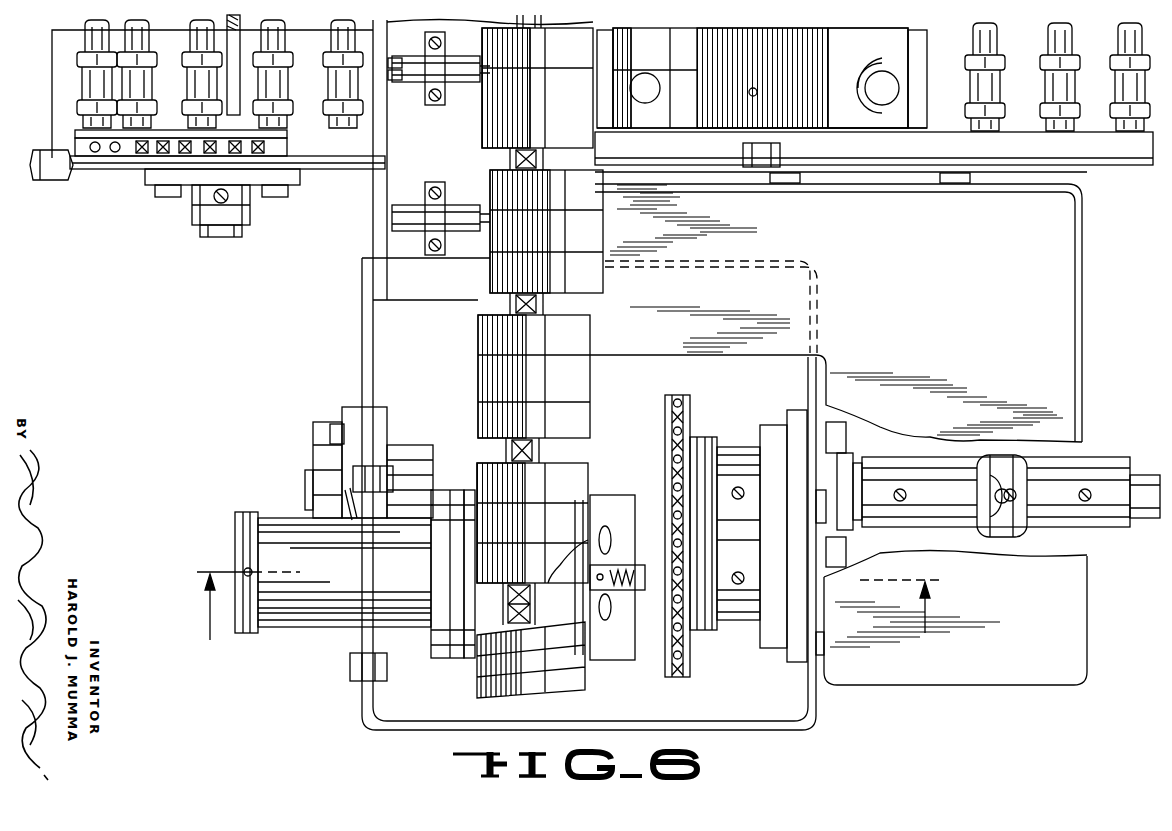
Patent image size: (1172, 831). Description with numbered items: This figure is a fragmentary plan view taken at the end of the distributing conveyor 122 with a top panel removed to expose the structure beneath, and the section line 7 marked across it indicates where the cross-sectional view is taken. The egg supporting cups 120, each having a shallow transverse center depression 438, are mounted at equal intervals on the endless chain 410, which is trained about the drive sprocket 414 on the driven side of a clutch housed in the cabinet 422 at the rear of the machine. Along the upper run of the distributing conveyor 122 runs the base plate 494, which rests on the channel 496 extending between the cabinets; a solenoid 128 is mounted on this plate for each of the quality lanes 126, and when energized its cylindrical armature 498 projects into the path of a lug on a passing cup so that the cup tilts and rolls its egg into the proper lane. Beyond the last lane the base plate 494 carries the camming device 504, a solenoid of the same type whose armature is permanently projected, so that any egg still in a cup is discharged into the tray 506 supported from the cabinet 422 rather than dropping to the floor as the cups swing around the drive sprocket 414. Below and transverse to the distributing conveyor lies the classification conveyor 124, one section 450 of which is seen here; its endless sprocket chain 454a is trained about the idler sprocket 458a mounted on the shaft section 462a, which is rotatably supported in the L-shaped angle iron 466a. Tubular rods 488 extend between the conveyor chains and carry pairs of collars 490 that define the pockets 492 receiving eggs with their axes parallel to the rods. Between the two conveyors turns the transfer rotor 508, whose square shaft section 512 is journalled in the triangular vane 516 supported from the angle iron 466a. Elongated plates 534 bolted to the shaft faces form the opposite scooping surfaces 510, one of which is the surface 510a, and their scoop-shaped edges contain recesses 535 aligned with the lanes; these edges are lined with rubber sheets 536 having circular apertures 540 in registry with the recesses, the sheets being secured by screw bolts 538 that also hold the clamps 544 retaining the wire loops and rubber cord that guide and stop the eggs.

The classification conveyor 124 is at (70, 72).
The quality lanes 126 is at (97, 87).
The collars 490 is at (192, 70).
The pockets 492 is at (193, 88).
The tubular rods 488 is at (343, 88).
The classification conveyor section 450 is at (1082, 112).
The endless sprocket chain 454a is at (73, 135).
The idler sprocket 458a is at (283, 145).
The L-shaped angle iron 466a is at (97, 168).
The shaft section 462a is at (222, 233).
The base plate 494 is at (441, 148).
The channel 496 is at (375, 238).
The cylindrical armature 498 is at (477, 62).
The solenoid 128 is at (462, 82).
The camming device 504 is at (402, 218).
The transverse center depression 438 is at (562, 147).
The endless chain 410 is at (512, 158).
The cups 120 is at (562, 117).
The drive sprocket 414 is at (527, 592).
The distributing conveyor 122 is at (555, 694).
The clamps 544 is at (665, 122).
The scooping surfaces 510 is at (885, 52).
The elongated plates 534 is at (760, 80).
The screw bolts 538 is at (683, 117).
The scooping surface 510a is at (842, 71).
The rubber sheets 536 is at (749, 94).
The shaft section 512 is at (753, 128).
The rotor 508 is at (840, 104).
The circular apertures 540 is at (878, 108).
The recesses 535 is at (885, 66).
The triangular vane 516 is at (993, 168).
The tray 506 is at (970, 352).
The cabinet 422 is at (362, 357).
The section line 7 is at (565, 606).